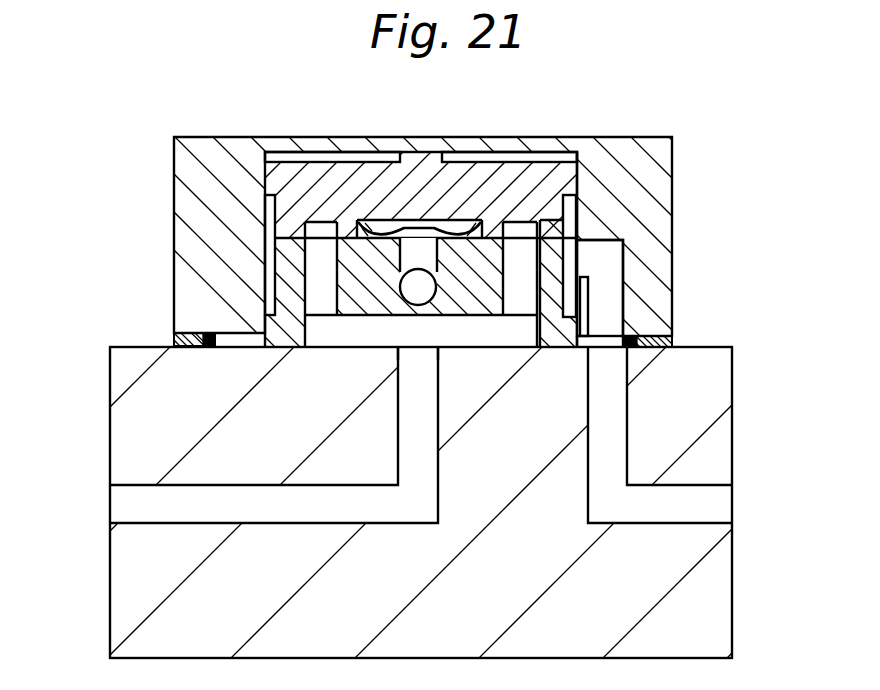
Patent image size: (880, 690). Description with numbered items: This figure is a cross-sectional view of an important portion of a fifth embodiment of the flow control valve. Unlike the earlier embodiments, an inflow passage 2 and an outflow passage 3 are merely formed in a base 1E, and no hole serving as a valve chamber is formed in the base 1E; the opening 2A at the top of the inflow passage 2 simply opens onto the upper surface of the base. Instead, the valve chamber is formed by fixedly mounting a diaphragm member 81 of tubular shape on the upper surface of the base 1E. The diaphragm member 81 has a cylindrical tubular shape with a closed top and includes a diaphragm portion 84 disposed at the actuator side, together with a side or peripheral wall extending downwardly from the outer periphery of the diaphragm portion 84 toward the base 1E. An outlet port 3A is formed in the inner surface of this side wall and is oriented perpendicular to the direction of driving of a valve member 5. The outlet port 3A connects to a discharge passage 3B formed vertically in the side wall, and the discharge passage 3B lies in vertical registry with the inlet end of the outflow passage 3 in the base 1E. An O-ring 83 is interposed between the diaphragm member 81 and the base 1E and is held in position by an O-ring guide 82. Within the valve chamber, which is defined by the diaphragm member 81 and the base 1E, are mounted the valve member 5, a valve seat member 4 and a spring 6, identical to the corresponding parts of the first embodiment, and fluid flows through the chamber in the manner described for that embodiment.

The diaphragm member 81 is at (660, 172).
The diaphragm portion 84 is at (381, 138).
The valve member 5 is at (553, 172).
The spring 6 is at (472, 218).
The valve seat member 4 is at (285, 268).
The outlet port 3A is at (581, 262).
The discharge passage 3B is at (611, 291).
The O-ring guide 82 is at (172, 338).
The O-ring 83 is at (213, 348).
The base 1E is at (718, 447).
The inflow passage 2 is at (130, 498).
The opening 2A is at (430, 348).
The outflow passage 3 is at (713, 510).